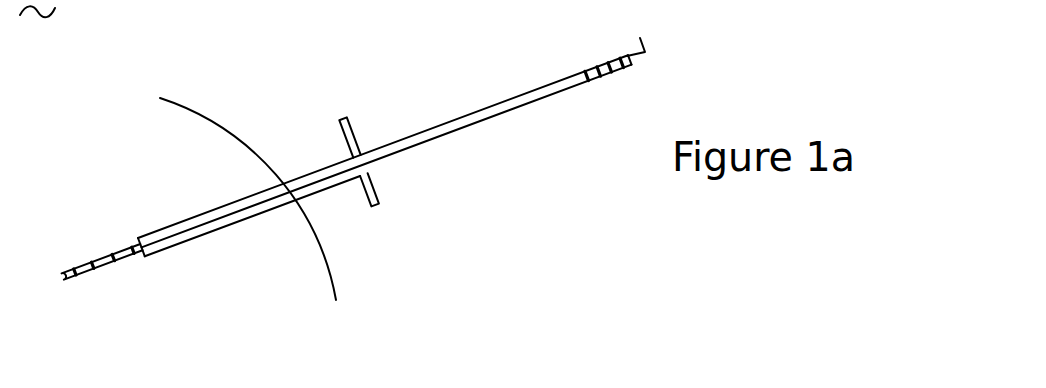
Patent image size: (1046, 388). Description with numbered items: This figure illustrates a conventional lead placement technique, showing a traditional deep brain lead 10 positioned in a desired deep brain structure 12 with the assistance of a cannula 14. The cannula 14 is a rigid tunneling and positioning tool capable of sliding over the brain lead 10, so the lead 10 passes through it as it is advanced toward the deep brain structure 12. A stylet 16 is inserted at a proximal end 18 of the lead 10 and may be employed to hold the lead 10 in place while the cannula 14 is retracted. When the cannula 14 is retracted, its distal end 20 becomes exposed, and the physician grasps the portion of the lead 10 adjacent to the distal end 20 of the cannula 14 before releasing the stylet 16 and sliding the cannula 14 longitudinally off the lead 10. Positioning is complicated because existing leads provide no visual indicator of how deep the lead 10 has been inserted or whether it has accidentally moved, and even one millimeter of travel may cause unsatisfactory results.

The deep brain lead 10 is at (507, 100).
The deep brain structure 12 is at (192, 309).
The cannula 14 is at (320, 191).
The stylet 16 is at (643, 44).
The proximal end 18 is at (624, 56).
The distal end 20 is at (143, 237).